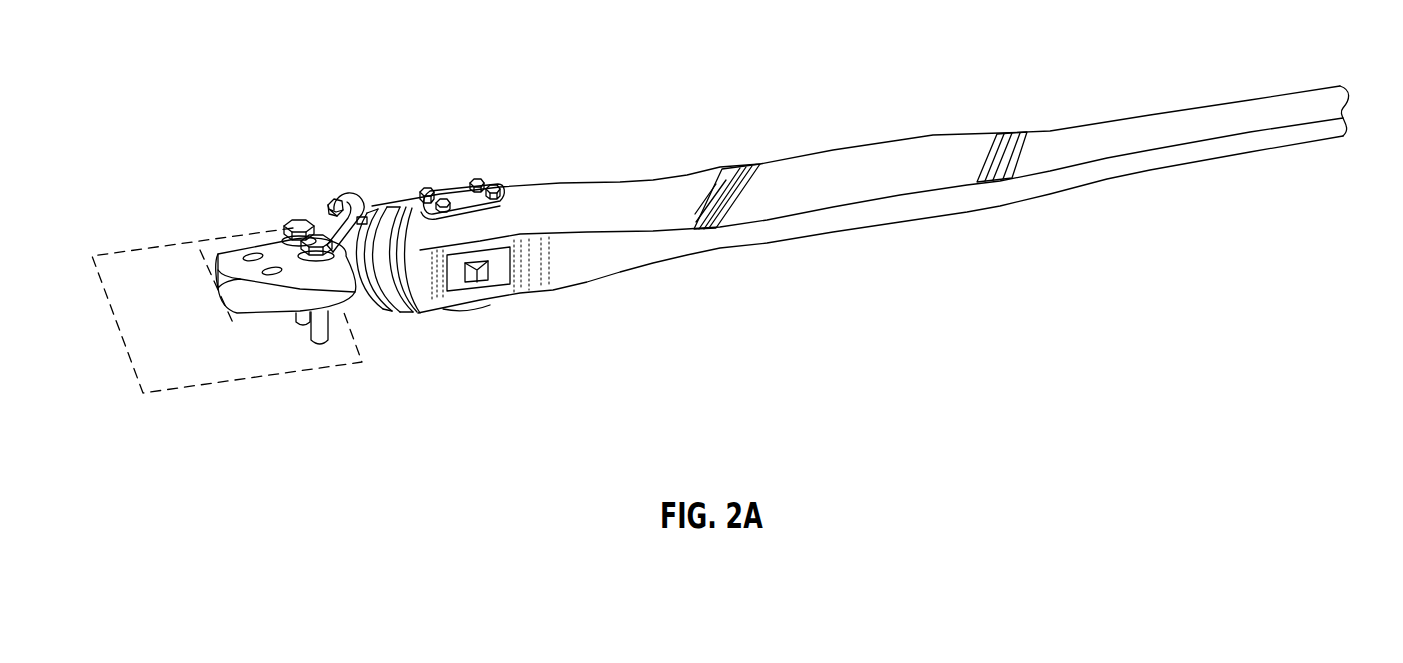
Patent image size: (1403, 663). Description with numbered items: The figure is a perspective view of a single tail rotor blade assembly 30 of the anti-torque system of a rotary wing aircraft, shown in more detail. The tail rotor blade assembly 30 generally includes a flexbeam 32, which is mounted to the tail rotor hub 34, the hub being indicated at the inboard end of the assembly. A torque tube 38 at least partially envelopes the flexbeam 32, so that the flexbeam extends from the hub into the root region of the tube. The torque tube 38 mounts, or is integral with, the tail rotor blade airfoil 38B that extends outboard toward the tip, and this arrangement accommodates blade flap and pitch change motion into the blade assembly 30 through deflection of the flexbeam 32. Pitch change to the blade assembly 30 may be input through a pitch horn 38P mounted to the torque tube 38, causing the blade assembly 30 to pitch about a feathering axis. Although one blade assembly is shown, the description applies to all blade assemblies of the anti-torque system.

The tail rotor blade assembly 30 is at (673, 131).
The flexbeam 32 is at (262, 303).
The tail rotor hub 34 is at (183, 373).
The torque tube 38 is at (431, 315).
The tail rotor blade airfoil 38B is at (1208, 125).
The pitch horn 38P is at (498, 279).